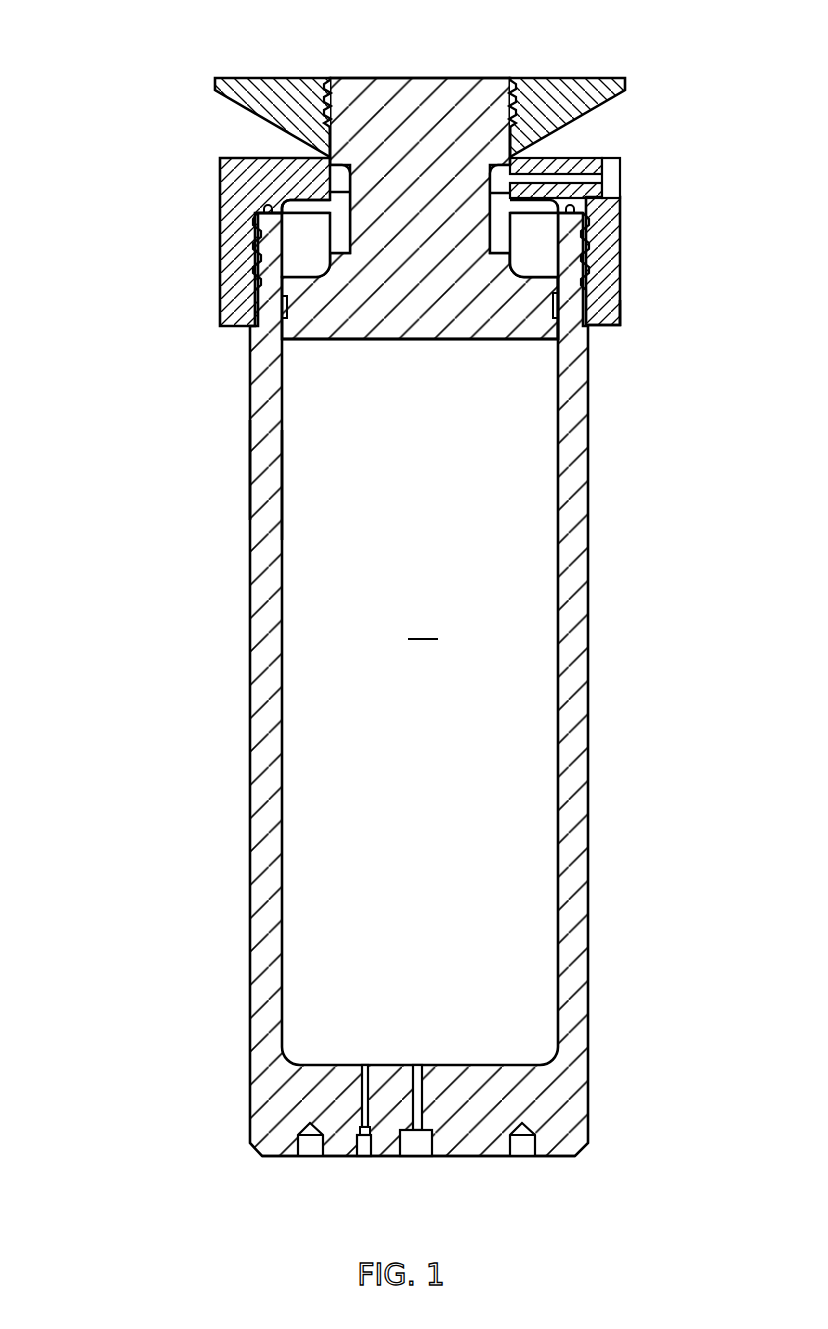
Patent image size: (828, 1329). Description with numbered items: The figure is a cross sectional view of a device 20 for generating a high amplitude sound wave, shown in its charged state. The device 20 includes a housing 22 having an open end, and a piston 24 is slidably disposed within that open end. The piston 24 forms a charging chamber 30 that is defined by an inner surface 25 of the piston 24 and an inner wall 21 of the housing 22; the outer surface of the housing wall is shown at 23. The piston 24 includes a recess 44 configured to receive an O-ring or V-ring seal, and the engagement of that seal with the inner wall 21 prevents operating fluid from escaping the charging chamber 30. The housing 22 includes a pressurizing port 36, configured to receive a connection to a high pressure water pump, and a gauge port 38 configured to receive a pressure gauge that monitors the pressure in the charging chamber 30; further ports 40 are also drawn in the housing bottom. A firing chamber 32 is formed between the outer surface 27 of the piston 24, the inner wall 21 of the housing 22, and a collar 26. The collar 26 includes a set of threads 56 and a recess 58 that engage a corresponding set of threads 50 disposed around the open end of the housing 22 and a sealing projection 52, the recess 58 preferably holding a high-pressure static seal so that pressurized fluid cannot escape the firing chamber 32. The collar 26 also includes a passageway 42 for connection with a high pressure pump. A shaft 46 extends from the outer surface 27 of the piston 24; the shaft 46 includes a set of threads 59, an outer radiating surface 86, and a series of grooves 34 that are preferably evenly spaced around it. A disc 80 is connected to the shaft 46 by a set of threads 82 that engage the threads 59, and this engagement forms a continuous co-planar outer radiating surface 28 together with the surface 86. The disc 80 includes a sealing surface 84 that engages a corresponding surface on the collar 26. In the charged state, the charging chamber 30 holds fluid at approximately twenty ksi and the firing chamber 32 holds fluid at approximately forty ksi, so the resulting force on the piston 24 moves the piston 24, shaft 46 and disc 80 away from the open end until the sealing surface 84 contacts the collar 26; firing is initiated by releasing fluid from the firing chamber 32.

The device 20 is at (125, 124).
The inner wall 21 is at (283, 483).
The housing 22 is at (262, 560).
The outer wall surface 23 is at (252, 476).
The piston 24 is at (497, 325).
The inner surface 25 is at (380, 340).
The collar 26 is at (617, 318).
The outer surface 27 is at (262, 246).
The outer radiating surface 28 is at (622, 78).
The charging chamber 30 is at (422, 626).
The firing chamber 32 is at (288, 242).
The grooves 34 is at (503, 247).
The pressurizing port 36 is at (416, 1146).
The gauge port 38 is at (365, 1149).
The port 40 is at (310, 1147).
The passageway 42 is at (606, 176).
The recess 44 is at (284, 298).
The shaft 46 is at (435, 158).
The threads 50 is at (582, 284).
The sealing projection 52 is at (586, 203).
The threads 56 is at (590, 246).
The recess 58 is at (270, 204).
The threads 59 is at (332, 78).
The disc 80 is at (243, 78).
The threads 82 is at (508, 78).
The sealing surface 84 is at (517, 157).
The outer radiating surface 86 is at (371, 78).